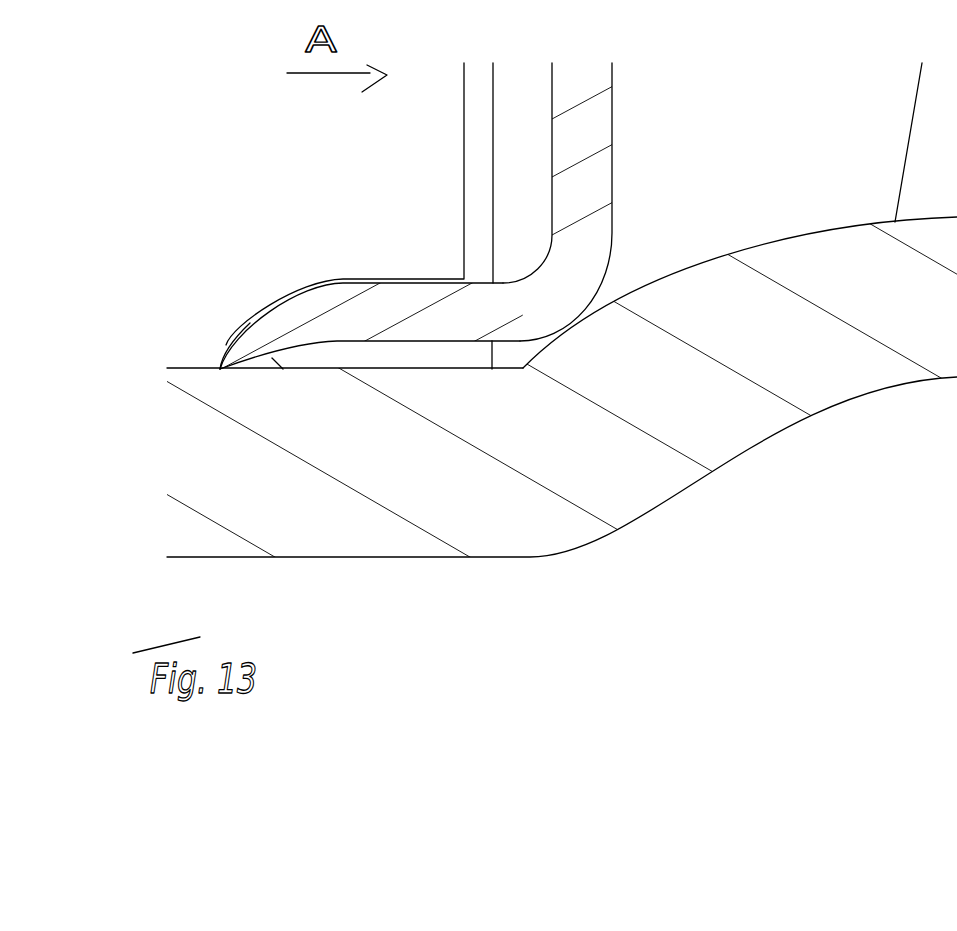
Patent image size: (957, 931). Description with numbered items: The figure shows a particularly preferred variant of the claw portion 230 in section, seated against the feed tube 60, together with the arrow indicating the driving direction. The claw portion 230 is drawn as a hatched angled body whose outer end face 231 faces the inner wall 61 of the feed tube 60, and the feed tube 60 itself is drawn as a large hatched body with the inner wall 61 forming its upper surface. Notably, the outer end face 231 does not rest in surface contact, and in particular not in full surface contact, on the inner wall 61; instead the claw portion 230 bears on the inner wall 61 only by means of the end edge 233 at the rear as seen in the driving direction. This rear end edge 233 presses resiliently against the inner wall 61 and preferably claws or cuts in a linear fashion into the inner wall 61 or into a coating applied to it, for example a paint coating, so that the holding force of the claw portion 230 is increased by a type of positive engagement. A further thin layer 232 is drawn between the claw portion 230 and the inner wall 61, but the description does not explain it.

The feed tube 60 is at (713, 435).
The inner wall 61 is at (180, 368).
The claw portion 230 is at (402, 305).
The outer end face 231 is at (285, 373).
The sealing layer 232 is at (318, 352).
The end edge 233 is at (220, 369).